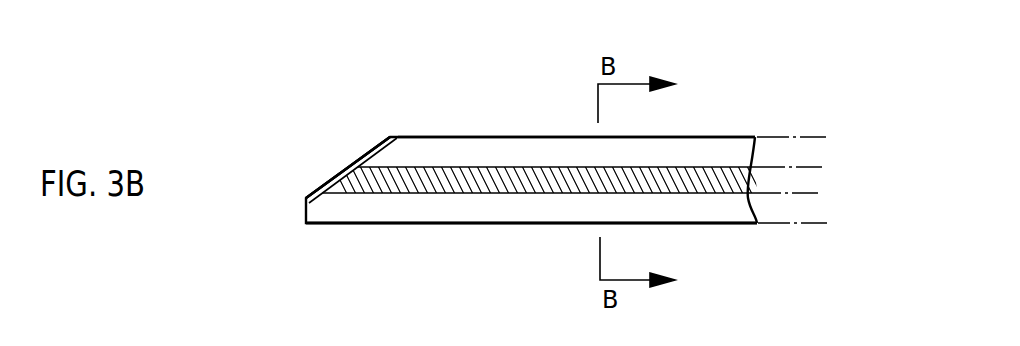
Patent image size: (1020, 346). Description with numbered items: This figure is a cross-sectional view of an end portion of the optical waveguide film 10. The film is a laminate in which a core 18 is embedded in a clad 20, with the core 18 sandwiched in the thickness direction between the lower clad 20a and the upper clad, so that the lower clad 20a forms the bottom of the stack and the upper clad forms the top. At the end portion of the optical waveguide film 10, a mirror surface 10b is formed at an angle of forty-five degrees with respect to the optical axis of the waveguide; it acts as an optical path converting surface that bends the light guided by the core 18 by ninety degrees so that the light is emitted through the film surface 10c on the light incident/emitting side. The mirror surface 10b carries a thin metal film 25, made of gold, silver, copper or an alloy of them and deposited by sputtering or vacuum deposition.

The optical waveguide film 10 is at (723, 128).
The mirror surface 10b is at (322, 182).
The film surface 10c is at (468, 224).
The core 18 is at (743, 178).
The clad 20 is at (746, 152).
The lower clad 20a is at (715, 213).
The metal film 25 is at (370, 148).